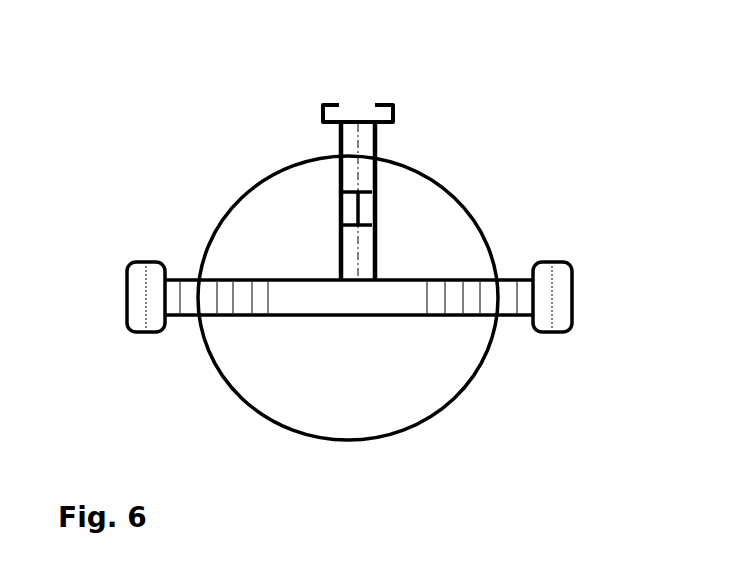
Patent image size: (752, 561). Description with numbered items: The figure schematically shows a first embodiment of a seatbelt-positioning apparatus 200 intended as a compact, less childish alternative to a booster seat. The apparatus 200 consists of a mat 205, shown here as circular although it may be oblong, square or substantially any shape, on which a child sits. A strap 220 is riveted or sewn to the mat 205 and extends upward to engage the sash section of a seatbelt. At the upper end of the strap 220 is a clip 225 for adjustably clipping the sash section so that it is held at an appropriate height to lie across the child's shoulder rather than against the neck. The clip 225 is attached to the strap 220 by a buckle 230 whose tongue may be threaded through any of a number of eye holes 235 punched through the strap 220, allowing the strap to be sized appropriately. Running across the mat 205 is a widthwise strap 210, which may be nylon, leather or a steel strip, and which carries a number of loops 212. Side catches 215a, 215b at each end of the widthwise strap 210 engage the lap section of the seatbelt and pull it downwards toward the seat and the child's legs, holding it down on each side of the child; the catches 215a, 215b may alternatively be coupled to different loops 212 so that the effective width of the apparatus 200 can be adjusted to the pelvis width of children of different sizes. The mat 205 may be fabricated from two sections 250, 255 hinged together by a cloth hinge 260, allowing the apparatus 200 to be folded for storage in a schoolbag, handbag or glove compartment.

The apparatus 200 is at (194, 156).
The mat 205 is at (470, 211).
The widthwise strap 210 is at (252, 317).
The loops 212 is at (472, 298).
The side catch 215a is at (127, 305).
The side catch 215b is at (572, 281).
The strap 220 is at (377, 174).
The clip 225 is at (340, 100).
The buckle 230 is at (355, 209).
The eye holes 235 is at (353, 137).
The section 250 is at (432, 250).
The section 255 is at (285, 388).
The cloth hinge 260 is at (400, 318).